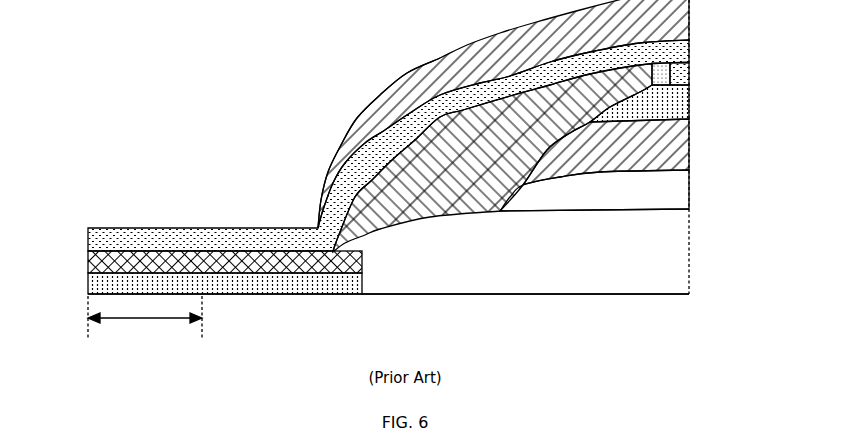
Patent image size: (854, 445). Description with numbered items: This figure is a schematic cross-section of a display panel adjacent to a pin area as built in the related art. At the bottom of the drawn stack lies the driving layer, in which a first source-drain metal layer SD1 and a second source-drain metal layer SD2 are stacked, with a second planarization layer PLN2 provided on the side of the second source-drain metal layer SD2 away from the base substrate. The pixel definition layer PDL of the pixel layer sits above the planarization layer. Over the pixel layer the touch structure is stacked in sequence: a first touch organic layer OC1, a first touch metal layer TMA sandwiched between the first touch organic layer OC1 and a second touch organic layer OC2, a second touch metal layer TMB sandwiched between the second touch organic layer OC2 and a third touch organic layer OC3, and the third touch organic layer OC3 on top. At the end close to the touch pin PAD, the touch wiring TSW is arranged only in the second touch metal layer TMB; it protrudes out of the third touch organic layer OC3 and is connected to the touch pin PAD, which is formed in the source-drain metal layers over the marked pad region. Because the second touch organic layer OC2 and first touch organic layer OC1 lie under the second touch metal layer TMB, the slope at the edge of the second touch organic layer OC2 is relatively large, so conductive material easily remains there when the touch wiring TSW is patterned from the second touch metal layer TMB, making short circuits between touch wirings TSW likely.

The third touch organic layer OC3 is at (667, 26).
The second touch metal layer TMB is at (668, 55).
The second touch organic layer OC2 is at (674, 72).
The first touch metal layer TMA is at (668, 103).
The first touch organic layer OC1 is at (668, 147).
The pixel definition layer PDL is at (667, 192).
The second planarization layer PLN2 is at (667, 262).
The second source-drain metal layer SD2 is at (98, 263).
The first source-drain metal layer SD1 is at (108, 281).
The touch pin PAD is at (145, 320).
The touch wiring TSW is at (387, 140).